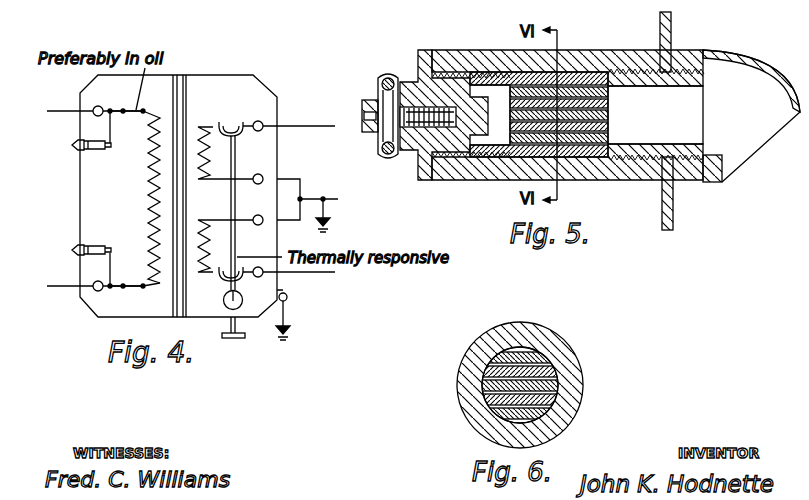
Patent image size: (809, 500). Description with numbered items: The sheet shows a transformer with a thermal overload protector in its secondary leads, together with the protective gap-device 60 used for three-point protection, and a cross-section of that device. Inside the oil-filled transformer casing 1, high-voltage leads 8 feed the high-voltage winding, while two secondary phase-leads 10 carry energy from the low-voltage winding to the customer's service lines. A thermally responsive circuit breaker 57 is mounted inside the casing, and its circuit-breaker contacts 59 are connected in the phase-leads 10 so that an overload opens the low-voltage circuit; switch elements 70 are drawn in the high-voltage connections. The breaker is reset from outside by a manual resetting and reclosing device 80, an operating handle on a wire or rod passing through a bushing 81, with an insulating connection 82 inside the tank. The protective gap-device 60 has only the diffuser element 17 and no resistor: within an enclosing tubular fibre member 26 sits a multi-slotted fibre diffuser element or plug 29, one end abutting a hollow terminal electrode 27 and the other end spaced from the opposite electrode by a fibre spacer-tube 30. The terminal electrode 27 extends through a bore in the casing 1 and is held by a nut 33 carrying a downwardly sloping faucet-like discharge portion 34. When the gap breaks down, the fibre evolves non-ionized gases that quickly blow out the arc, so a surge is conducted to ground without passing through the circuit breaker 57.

In FIG. 5, the transformer casing 1 is at (665, 233).
In FIG. 5, the high-voltage leads 8 is at (389, 159).
In FIG. 4, the secondary phase-leads 10 is at (213, 127).
In FIG. 5, the diffuser element 17 is at (588, 154).
In FIG. 6, the diffuser element 17 is at (550, 361).
In FIG. 5, the enclosing tubular fibre member 26 is at (592, 50).
In FIG. 6, the enclosing tubular fibre member 26 is at (550, 336).
In FIG. 5, the terminal electrode 27 is at (627, 70).
In FIG. 5, the multi-slotted fibre diffuser element or plug 29 is at (572, 72).
In FIG. 6, the multi-slotted fibre diffuser element or plug 29 is at (478, 393).
In FIG. 5, the fibre spacer-tube 30 is at (491, 153).
In FIG. 5, the nut 33 is at (693, 179).
In FIG. 5, the faucet-like discharge portion 34 is at (753, 157).
In FIG. 4, the thermally responsive circuit breaker 57 is at (232, 123).
In FIG. 4, the circuit-breaker contacts 59 is at (243, 132).
In FIG. 4, the protective gap-device 60 is at (87, 150).
In FIG. 5, the protective gap-device 60 is at (581, 134).
In FIG. 4, the contact 70 is at (134, 113).
In FIG. 4, the manual resetting and reclosing device 80 is at (236, 338).
In FIG. 4, the bushing 81 is at (223, 302).
In FIG. 4, the insulating connection 82 is at (223, 277).